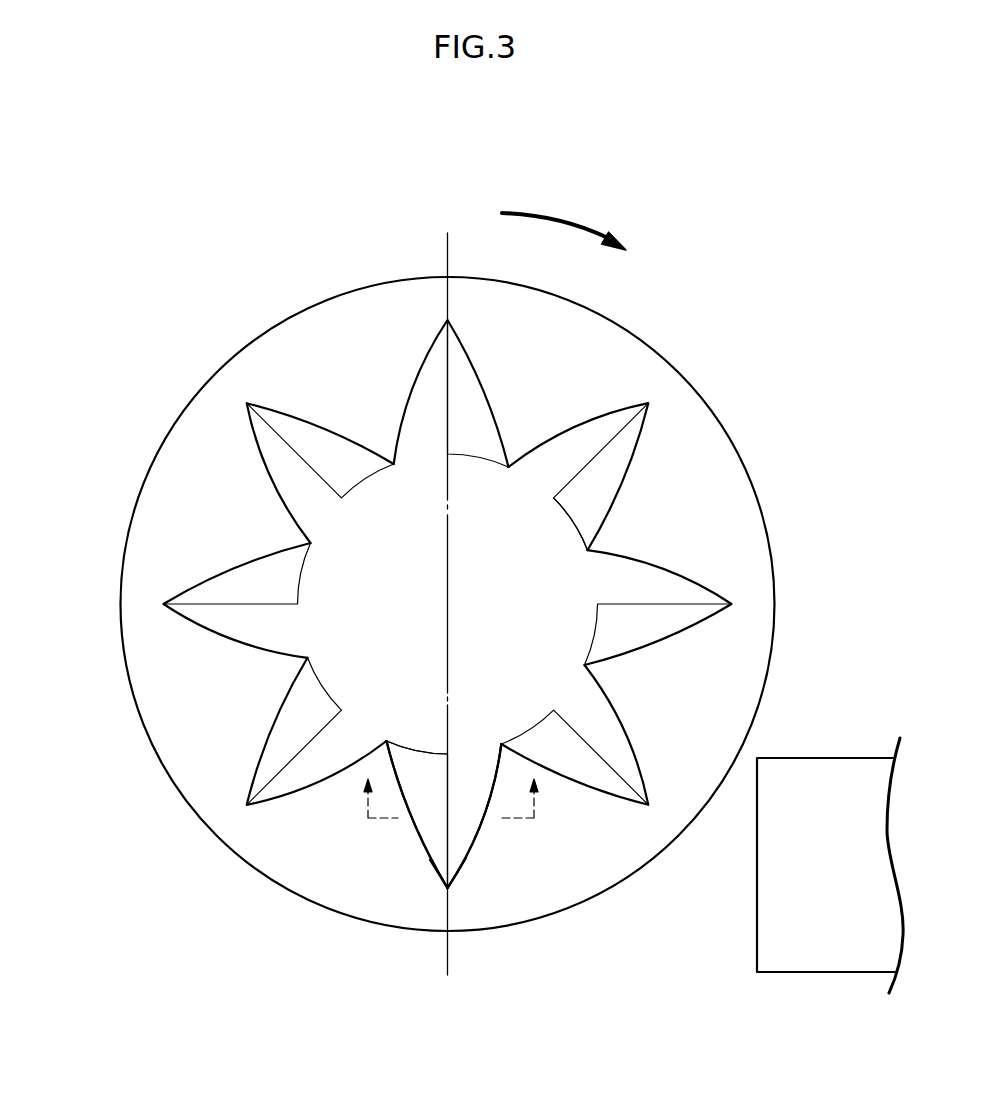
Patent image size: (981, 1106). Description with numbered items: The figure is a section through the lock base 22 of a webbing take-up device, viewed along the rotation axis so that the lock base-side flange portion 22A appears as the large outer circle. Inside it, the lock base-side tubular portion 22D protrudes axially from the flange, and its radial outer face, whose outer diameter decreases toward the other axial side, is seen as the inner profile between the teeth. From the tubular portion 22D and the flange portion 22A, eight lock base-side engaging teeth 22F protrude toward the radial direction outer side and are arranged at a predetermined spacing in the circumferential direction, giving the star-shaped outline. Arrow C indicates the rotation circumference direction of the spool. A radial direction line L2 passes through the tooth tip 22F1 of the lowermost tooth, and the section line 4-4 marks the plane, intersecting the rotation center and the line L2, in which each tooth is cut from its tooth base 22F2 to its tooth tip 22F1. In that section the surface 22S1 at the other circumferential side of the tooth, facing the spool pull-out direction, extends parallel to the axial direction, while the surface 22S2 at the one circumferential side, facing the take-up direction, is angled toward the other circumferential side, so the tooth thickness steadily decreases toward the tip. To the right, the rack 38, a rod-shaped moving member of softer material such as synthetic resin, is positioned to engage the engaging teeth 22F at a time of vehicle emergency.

The lock base 22 is at (466, 579).
The lock base-side flange portion 22A is at (448, 533).
The lock base-side engaging teeth 22F is at (466, 600).
The lock base-side tubular portion 22D is at (696, 490).
The tooth tip 22F1 is at (382, 941).
The tooth base 22F2 is at (305, 844).
The surface at the other circumferential direction side 22S1 is at (541, 859).
The surface at the one circumferential direction side 22S2 is at (340, 863).
The rack 38 is at (830, 816).
The arrow C is at (583, 205).
The radial direction line L2 is at (377, 658).
The line 4- 4 is at (451, 798).